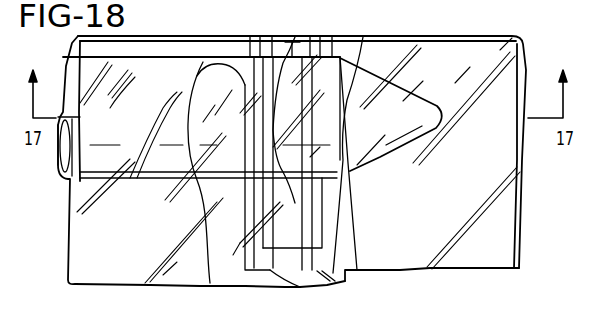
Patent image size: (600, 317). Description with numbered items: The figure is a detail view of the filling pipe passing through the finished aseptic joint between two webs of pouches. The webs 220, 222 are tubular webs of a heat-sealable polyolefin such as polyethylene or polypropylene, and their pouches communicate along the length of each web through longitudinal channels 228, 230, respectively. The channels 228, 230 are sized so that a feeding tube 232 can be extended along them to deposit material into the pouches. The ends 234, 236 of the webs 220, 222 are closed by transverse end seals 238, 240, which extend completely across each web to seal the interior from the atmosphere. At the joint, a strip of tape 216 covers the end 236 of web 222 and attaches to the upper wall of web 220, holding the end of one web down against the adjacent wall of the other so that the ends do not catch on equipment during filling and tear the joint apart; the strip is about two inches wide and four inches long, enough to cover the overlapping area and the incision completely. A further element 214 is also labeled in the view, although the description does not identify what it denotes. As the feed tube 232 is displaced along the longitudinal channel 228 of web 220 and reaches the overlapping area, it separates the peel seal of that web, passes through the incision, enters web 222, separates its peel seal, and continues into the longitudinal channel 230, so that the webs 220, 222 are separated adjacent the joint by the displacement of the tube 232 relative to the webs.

The slot 214 is at (292, 225).
The strip of tape 216 is at (215, 252).
The web 220 is at (167, 236).
The web 222 is at (474, 169).
The longitudinal channel 228 is at (153, 52).
The longitudinal channel 230 is at (462, 53).
The feeding tube 232 is at (58, 164).
The end of web 234 is at (330, 210).
The end of web 236 is at (198, 71).
The transverse end seal 238 is at (303, 260).
The transverse end seal 240 is at (272, 267).